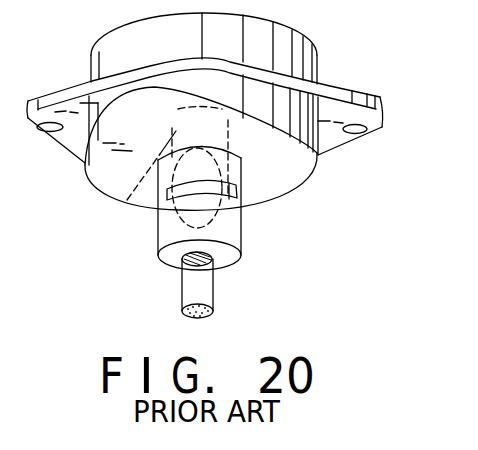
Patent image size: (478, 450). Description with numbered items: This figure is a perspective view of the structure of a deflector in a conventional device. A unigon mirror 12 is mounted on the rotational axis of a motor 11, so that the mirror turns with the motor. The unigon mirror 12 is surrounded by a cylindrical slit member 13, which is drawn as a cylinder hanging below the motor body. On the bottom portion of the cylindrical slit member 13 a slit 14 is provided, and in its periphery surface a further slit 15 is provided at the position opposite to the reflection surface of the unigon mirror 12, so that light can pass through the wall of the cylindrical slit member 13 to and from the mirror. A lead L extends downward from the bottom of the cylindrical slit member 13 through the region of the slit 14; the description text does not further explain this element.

The motor 11 is at (308, 58).
The unigon mirror 12 is at (127, 200).
The cylindrical slit member 13 is at (241, 227).
The slit 14 is at (214, 261).
The slit 15 is at (158, 228).
The lead L is at (214, 297).